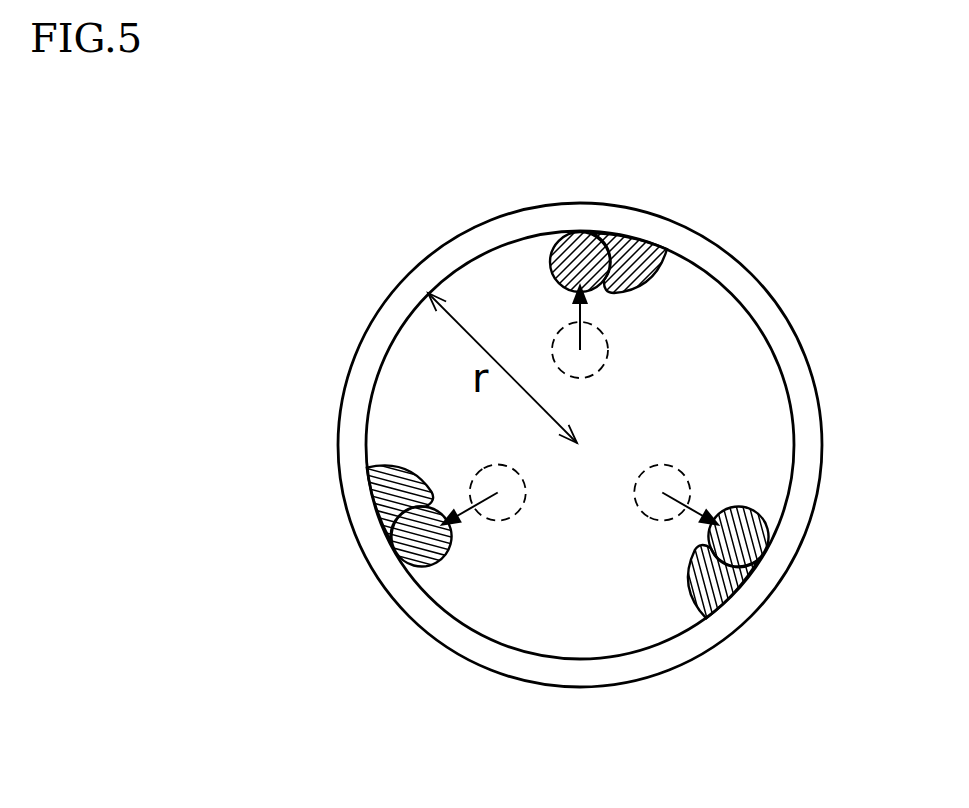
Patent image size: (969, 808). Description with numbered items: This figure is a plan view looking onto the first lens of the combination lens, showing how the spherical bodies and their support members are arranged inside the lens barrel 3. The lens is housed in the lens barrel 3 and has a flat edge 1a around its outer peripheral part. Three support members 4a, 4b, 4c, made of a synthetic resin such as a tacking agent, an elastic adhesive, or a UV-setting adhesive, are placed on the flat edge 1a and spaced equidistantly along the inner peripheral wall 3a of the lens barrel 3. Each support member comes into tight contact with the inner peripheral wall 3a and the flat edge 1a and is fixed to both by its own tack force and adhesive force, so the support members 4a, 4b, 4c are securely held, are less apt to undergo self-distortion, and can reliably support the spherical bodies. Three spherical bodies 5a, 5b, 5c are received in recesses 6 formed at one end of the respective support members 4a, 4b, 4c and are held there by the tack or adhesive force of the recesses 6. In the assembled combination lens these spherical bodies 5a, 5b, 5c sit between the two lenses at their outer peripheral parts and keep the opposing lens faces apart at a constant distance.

The flat edge 1a is at (581, 423).
The lens barrel 3 is at (378, 320).
The inner peripheral wall 3a is at (756, 338).
The support member 4a is at (714, 606).
The support member 4b is at (635, 235).
The support member 4c is at (392, 500).
The spherical body 5a is at (763, 546).
The spherical body 5b is at (576, 234).
The spherical body 5c is at (415, 567).
The recess 6 is at (586, 284).